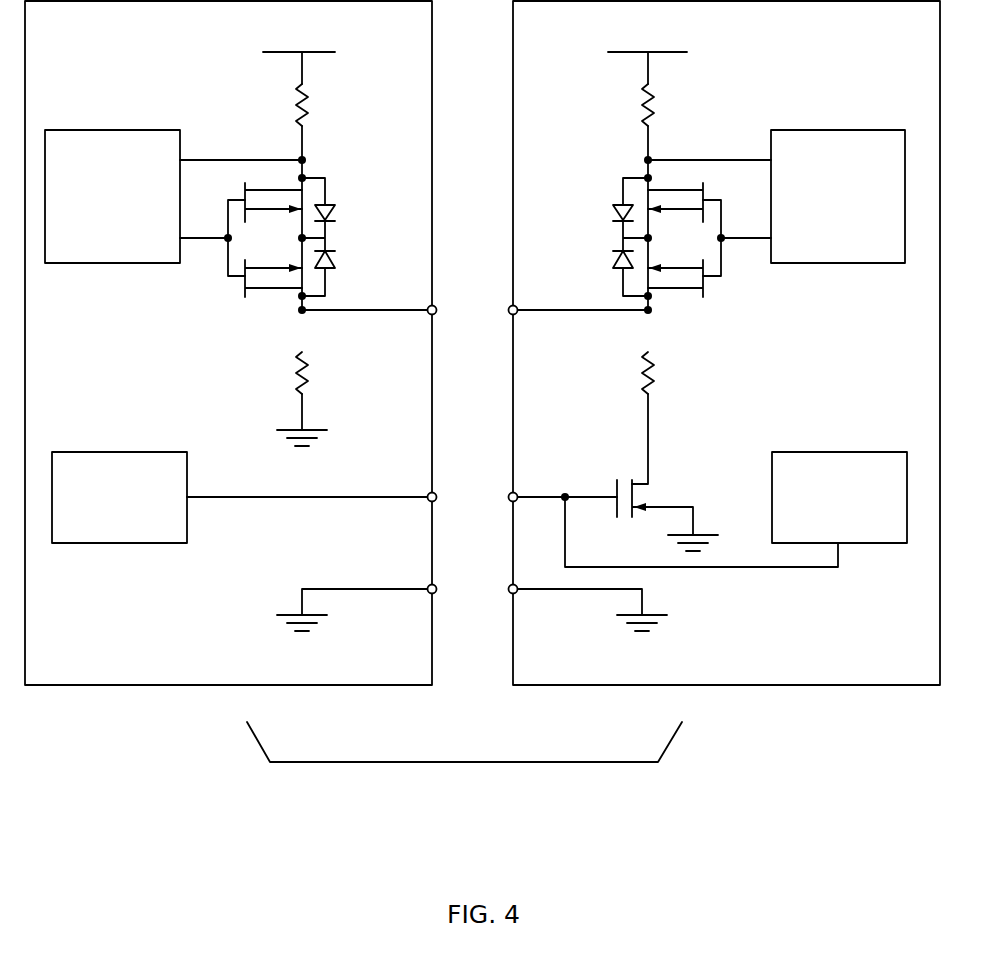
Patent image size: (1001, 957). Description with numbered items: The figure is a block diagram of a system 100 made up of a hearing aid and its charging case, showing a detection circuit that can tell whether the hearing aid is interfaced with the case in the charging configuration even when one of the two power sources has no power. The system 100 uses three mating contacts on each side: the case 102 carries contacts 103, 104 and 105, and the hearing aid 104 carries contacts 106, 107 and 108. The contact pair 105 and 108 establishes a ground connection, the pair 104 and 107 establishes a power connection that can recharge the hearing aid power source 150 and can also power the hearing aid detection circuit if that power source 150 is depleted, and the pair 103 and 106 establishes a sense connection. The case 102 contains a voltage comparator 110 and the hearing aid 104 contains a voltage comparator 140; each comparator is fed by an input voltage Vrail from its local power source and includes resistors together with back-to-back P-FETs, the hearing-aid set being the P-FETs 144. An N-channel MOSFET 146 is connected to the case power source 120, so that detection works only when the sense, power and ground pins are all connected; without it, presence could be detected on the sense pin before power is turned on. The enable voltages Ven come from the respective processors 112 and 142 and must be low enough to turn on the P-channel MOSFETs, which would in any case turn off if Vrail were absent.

The system 100 is at (172, 790).
The case 102 is at (250, 675).
The contact 103 is at (440, 309).
The hearing aid 104 is at (440, 496).
The contact 105 is at (440, 588).
The contact 106 is at (506, 312).
The contact 107 is at (506, 499).
The contact 108 is at (506, 591).
The voltage comparator 110 is at (260, 108).
The system processor 112 is at (100, 130).
The case power source 120 is at (158, 452).
The voltage comparator 140 is at (660, 256).
The system processor 142 is at (868, 130).
The back-to-back P-FETs 144 is at (601, 185).
The N-channel MOSFET 146 is at (616, 463).
The hearing aid power source 150 is at (872, 452).